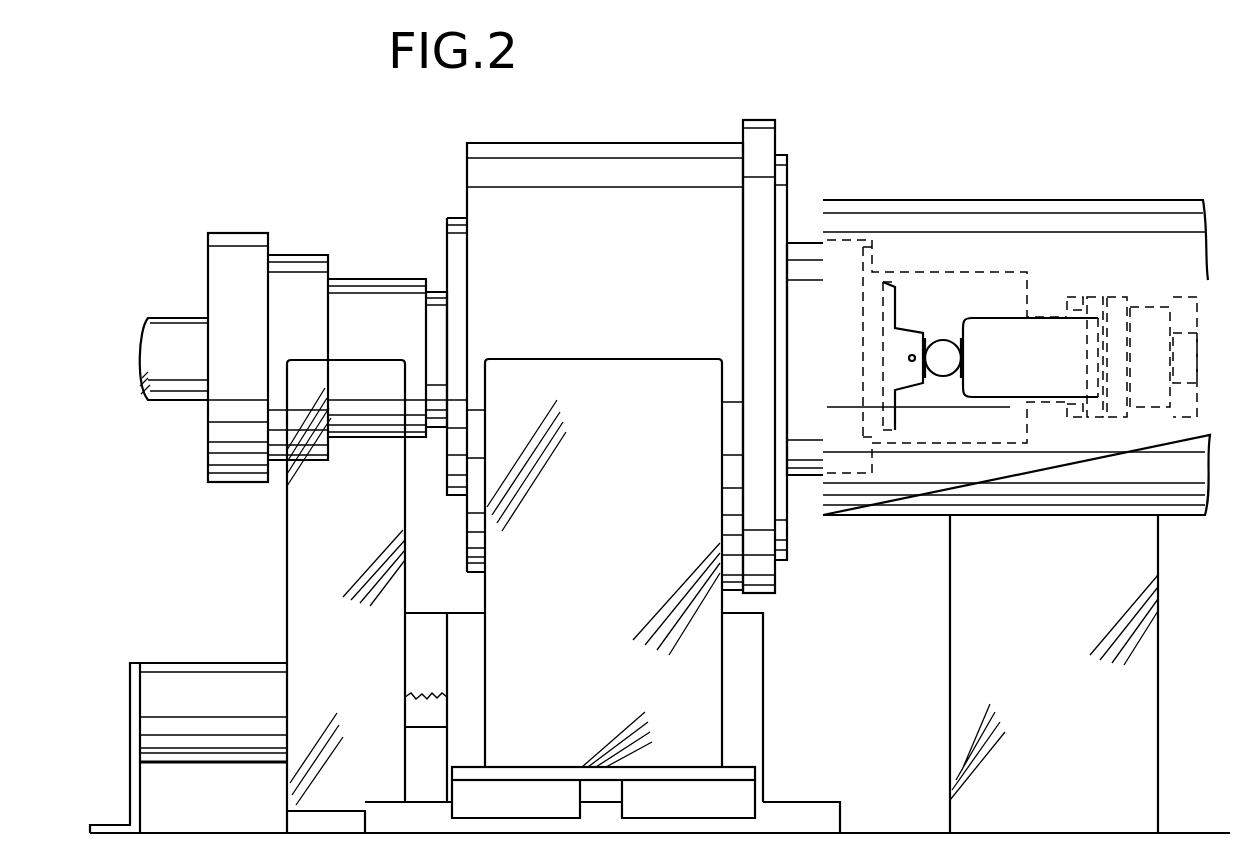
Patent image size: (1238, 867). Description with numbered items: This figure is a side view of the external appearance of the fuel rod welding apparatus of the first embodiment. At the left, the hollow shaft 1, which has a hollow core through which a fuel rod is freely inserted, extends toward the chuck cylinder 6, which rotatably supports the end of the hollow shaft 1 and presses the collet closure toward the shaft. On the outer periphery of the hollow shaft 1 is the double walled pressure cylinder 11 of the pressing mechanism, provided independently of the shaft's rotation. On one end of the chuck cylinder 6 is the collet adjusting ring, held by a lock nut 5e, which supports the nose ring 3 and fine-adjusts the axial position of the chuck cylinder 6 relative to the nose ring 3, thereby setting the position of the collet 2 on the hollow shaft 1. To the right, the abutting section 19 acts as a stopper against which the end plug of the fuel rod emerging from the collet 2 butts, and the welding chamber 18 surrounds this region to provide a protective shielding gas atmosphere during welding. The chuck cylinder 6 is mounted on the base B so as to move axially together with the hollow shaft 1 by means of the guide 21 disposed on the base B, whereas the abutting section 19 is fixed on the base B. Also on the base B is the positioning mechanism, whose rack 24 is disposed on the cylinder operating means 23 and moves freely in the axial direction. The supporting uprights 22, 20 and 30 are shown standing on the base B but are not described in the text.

The hollow shaft 1 is at (172, 318).
The pressure cylinder 11 is at (370, 280).
The chuck cylinder 6 is at (604, 146).
The lock nut 5e is at (764, 120).
The welding chamber 18 is at (1082, 200).
The nose ring 3 is at (913, 300).
The collet 2 is at (932, 325).
The abutting section 19 is at (1000, 317).
The pillar 22 is at (297, 548).
The cylinder operating means 23 is at (195, 677).
The rack 24 is at (422, 705).
The center pillar 20 is at (605, 580).
The guide 21 is at (813, 822).
The support pillar 30 is at (970, 628).
The base B is at (1042, 832).